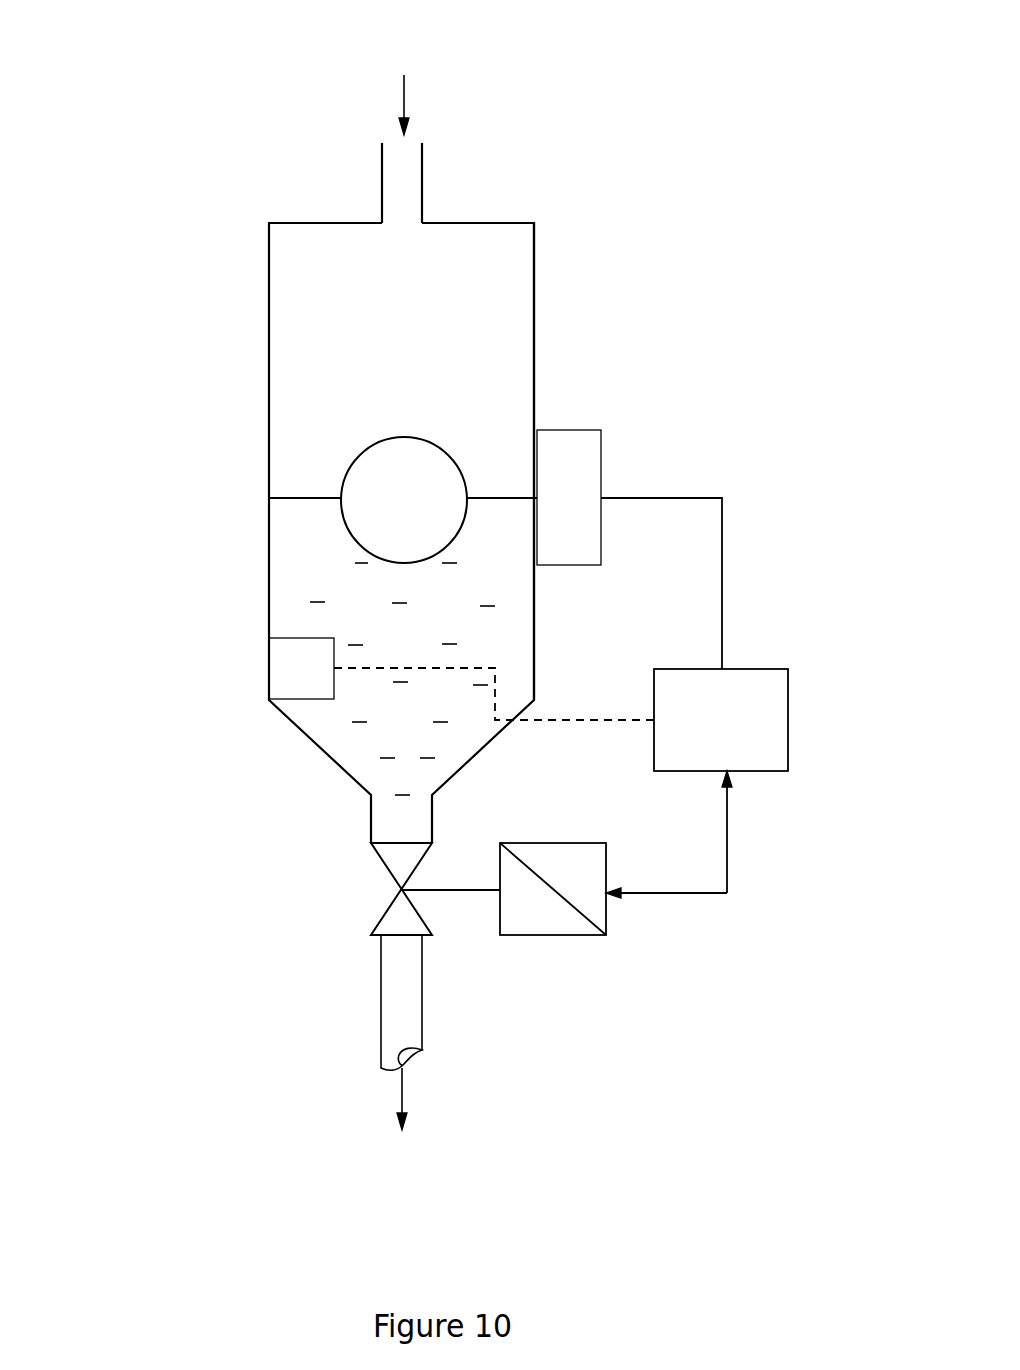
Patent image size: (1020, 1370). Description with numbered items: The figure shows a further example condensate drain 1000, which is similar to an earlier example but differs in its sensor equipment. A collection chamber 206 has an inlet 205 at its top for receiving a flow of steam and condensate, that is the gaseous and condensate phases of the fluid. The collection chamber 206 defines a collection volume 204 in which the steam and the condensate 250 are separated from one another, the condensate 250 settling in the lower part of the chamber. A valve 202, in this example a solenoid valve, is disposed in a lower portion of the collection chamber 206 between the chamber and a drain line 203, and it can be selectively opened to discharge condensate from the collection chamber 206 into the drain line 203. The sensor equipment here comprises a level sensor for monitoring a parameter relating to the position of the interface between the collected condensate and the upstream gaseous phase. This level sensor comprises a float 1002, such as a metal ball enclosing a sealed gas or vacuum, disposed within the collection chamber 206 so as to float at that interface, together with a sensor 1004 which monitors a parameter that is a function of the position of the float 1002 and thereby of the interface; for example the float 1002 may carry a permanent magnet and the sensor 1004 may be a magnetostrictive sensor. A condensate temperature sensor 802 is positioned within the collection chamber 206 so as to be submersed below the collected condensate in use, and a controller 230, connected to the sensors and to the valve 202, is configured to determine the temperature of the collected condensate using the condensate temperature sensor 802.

The condensate drain 1000 is at (767, 32).
The collection volume 204 is at (340, 342).
The inlet 205 is at (385, 175).
The collection chamber 206 is at (534, 360).
The float 1002 is at (365, 468).
The sensor 1004 is at (599, 461).
The condensate 250 is at (290, 593).
The condensate temperature sensor 802 is at (288, 670).
The controller 230 is at (788, 700).
The valve 202 is at (393, 865).
The drain line 203 is at (392, 1010).